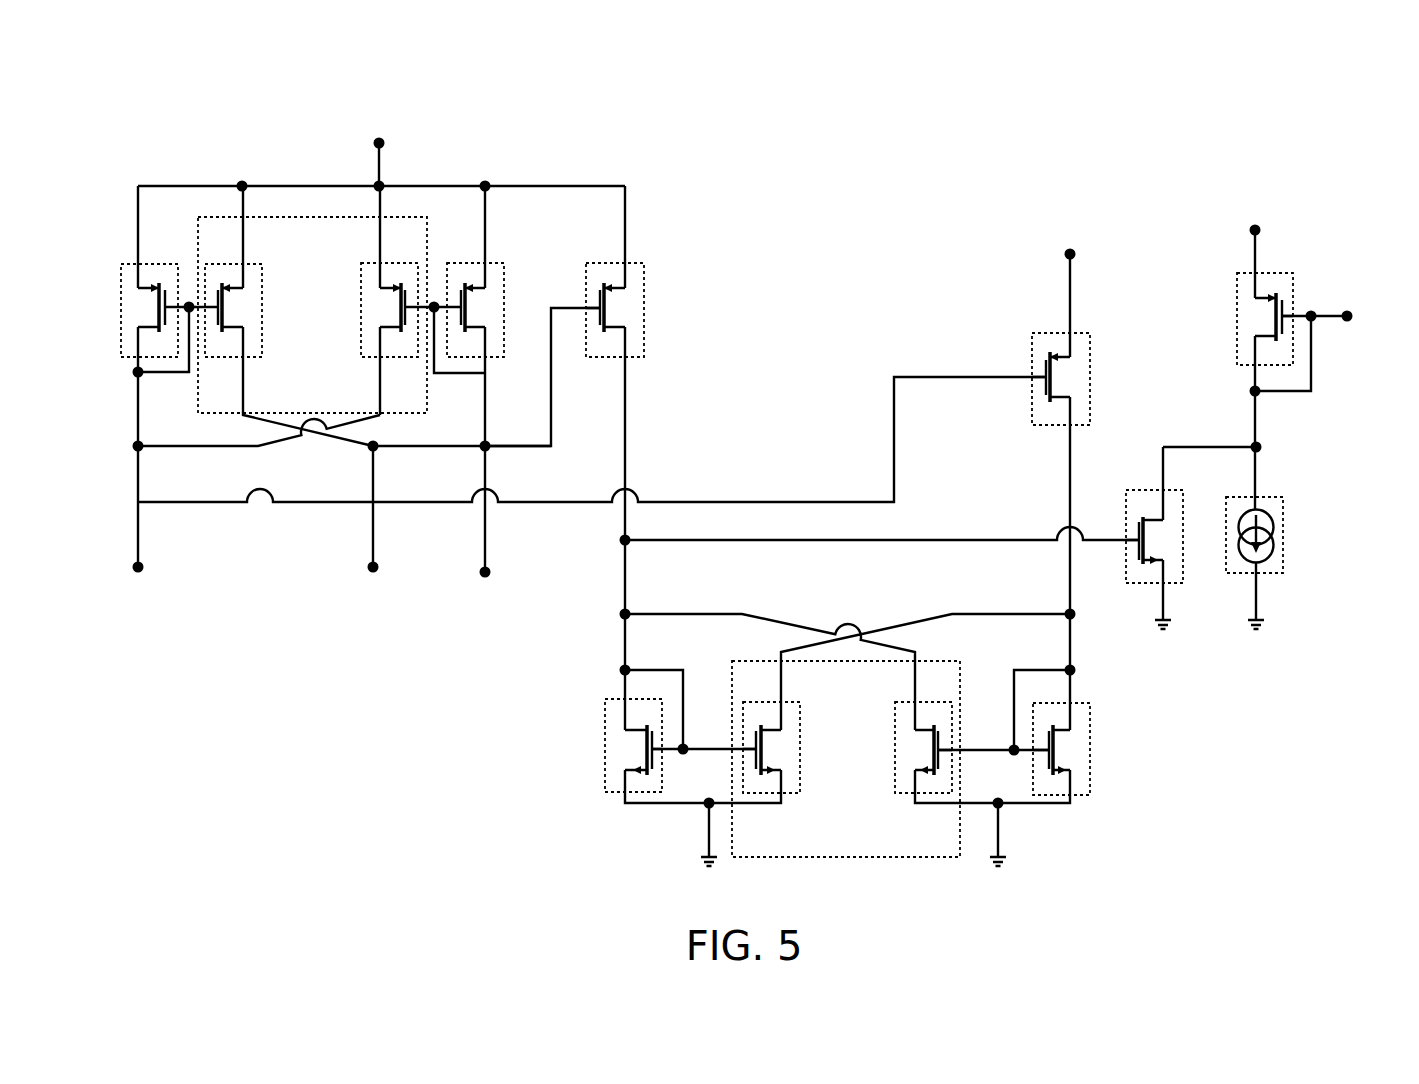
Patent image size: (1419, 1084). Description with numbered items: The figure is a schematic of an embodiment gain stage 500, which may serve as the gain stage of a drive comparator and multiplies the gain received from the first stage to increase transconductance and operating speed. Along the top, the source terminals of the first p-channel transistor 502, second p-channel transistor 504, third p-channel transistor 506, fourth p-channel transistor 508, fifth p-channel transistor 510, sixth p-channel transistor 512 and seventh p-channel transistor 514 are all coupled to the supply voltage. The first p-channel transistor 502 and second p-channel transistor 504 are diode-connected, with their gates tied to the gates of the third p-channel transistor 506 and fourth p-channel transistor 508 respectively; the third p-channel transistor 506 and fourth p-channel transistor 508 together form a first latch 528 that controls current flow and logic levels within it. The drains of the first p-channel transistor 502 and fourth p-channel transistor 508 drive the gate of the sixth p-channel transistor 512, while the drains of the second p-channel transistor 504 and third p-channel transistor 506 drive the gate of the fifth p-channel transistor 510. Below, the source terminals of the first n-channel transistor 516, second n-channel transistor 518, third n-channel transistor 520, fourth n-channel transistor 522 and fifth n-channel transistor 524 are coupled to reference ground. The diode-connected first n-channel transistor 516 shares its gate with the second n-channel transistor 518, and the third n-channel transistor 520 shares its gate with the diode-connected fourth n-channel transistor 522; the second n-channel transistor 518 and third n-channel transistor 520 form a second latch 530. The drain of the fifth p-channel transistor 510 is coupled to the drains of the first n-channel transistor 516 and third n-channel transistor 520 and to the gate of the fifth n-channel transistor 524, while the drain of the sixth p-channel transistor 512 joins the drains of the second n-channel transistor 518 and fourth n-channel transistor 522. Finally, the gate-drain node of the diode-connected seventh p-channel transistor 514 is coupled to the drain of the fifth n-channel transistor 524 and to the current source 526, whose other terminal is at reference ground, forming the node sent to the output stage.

The gain stage 500 is at (1350, 96).
The first p-channel transistor 502 is at (123, 357).
The second p-channel transistor 504 is at (497, 357).
The third p-channel transistor 506 is at (253, 357).
The fourth p-channel transistor 508 is at (367, 357).
The fifth p-channel transistor 510 is at (636, 357).
The sixth p-channel transistor 512 is at (1083, 426).
The seventh p-channel transistor 514 is at (1243, 366).
The first n-channel transistor 516 is at (610, 793).
The second n-channel transistor 518 is at (795, 794).
The third n-channel transistor 520 is at (900, 794).
The fourth n-channel transistor 522 is at (1087, 796).
The fifth n-channel transistor 524 is at (1143, 584).
The current source 526 is at (1233, 573).
The first latch 528 is at (297, 218).
The second latch 530 is at (887, 857).